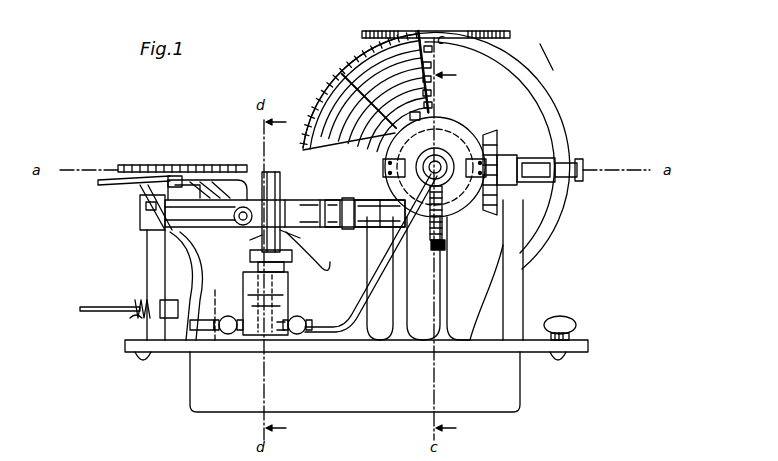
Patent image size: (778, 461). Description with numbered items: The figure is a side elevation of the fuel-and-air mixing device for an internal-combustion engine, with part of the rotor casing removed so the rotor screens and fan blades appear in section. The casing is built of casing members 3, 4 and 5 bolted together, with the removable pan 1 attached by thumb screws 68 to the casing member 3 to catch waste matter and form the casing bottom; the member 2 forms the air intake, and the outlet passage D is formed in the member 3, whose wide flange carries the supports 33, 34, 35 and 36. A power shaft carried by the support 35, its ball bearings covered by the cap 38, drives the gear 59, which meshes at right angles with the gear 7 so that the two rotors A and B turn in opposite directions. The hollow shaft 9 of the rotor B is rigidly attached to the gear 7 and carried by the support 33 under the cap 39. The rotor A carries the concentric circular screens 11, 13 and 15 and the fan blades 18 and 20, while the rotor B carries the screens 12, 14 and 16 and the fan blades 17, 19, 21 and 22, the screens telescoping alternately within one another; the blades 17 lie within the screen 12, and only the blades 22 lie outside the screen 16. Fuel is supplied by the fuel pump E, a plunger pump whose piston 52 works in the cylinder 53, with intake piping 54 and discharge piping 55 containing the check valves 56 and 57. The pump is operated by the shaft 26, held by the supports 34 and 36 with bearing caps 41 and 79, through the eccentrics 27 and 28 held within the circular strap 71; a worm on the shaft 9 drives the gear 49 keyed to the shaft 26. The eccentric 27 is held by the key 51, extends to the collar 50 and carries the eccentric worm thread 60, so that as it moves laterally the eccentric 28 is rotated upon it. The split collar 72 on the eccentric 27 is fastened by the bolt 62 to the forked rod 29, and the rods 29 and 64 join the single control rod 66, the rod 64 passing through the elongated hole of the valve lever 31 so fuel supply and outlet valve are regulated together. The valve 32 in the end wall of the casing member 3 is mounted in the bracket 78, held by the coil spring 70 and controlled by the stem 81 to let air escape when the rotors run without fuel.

The removable pan 1 is at (522, 398).
The member 2 is at (512, 36).
The casing member 3 is at (545, 248).
The casing member 4 is at (545, 70).
The casing member 5 is at (355, 58).
The gear 7 is at (462, 142).
The hollow shaft 9 is at (443, 150).
The screen 11 is at (416, 117).
The screen 12 is at (420, 105).
The screen 13 is at (419, 92).
The screen 14 is at (421, 79).
The screen 15 is at (428, 68).
The screen 16 is at (426, 56).
The fan blades 17 is at (345, 146).
The fan blades 18 is at (341, 136).
The fan blades 19 is at (336, 125).
The fan blades 20 is at (333, 114).
The fan blades 21 is at (330, 103).
The fan blades 22 is at (327, 92).
The pump shaft 26 is at (178, 230).
The eccentric 27 is at (322, 265).
The eccentric 28 is at (298, 200).
The control rod 29 is at (187, 191).
The valve lever 31 is at (312, 200).
The valve 32 is at (220, 305).
The support 33 is at (480, 298).
The support 34 is at (147, 240).
The support 35 is at (523, 222).
The support 36 is at (393, 305).
The cap 38 is at (505, 150).
The cap 39 is at (420, 146).
The bearing cap 41 is at (146, 208).
The gear 49 is at (446, 245).
The collar 50 is at (350, 198).
The key 51 is at (300, 240).
The piston 52 is at (284, 295).
The cylinder 53 is at (285, 307).
The intake piping 54 is at (212, 330).
The discharge piping 55 is at (285, 334).
The check valve 56 is at (228, 334).
The check valve 57 is at (300, 334).
The gear 59 is at (447, 215).
The eccentric worm thread 60 is at (332, 200).
The bolt 62 is at (238, 225).
The rod 64 is at (207, 190).
The single control rod 66 is at (123, 184).
The thumb screws 68 is at (566, 322).
The coil spring 70 is at (160, 305).
The circular strap 71 is at (262, 170).
The split collar 72 is at (258, 245).
The bracket 78 is at (190, 280).
The bearing cap 79 is at (378, 190).
The stem 81 is at (80, 309).
The rotor A is at (340, 70).
The rotor B is at (367, 77).
The outlet passage D is at (190, 165).
The fuel pump E is at (292, 280).